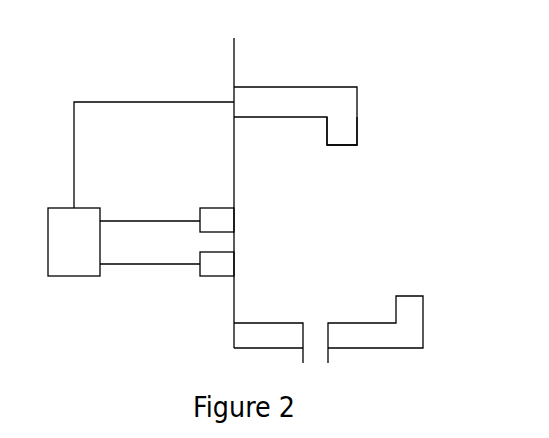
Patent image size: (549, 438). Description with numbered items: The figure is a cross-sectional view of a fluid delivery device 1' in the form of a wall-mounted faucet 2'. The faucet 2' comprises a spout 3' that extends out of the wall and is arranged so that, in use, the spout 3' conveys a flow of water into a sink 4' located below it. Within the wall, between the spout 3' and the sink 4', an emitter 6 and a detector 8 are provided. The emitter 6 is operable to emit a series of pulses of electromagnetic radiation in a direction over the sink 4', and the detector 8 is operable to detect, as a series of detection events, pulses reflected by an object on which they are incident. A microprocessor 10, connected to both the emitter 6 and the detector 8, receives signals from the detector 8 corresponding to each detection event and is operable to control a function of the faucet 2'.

The fluid delivery device 1' is at (435, 153).
The faucet 2' is at (295, 78).
The spout 3' is at (374, 127).
The sink 4' is at (403, 329).
The emitter 6 is at (225, 219).
The detector 8 is at (225, 263).
The microprocessor 10 is at (73, 243).